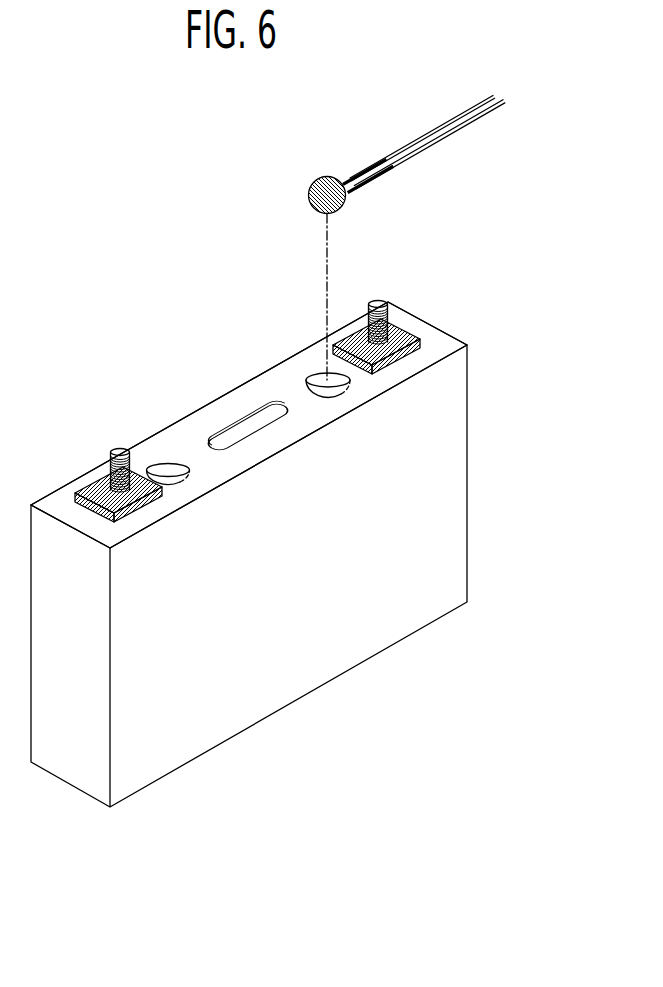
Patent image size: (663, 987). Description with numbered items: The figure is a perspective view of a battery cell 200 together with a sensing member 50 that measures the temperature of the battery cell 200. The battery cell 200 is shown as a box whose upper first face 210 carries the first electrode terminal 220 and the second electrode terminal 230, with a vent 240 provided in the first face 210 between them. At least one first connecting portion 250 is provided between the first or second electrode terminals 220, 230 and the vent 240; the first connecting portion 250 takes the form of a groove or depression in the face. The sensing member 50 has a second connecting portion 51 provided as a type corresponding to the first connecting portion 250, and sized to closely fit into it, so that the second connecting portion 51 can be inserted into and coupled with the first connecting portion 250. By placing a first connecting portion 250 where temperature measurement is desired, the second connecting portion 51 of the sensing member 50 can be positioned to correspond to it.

The sensing member 50 is at (344, 238).
The second connecting portion 51 is at (316, 181).
The battery cell 200 is at (478, 416).
The first face 210 is at (270, 383).
The first electrode terminal 220 is at (380, 302).
The second electrode terminal 230 is at (118, 450).
The vent 240 is at (243, 428).
The first connecting portion 250 is at (163, 468).